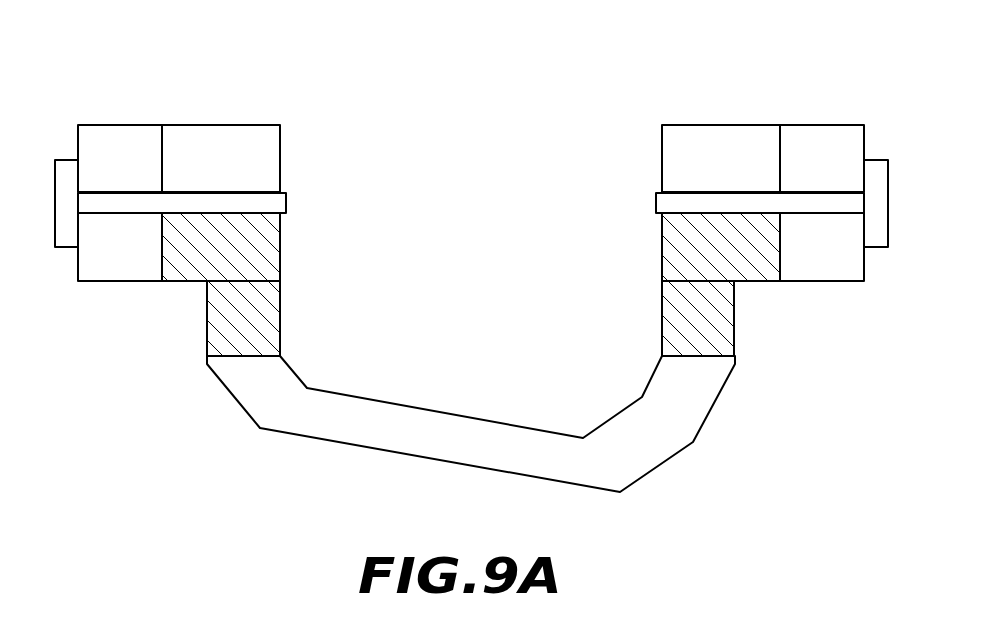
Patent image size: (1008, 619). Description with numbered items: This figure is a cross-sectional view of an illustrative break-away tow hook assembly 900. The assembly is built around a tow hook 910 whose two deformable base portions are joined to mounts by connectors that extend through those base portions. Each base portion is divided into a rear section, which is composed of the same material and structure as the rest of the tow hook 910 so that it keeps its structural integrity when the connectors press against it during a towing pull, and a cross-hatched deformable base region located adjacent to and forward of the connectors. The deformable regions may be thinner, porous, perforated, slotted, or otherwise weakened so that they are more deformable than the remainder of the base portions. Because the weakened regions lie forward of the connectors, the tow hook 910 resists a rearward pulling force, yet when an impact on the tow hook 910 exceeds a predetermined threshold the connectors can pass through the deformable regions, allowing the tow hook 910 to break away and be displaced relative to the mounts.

The bracket assembly 900 is at (100, 54).
The tow hook 910 is at (315, 430).